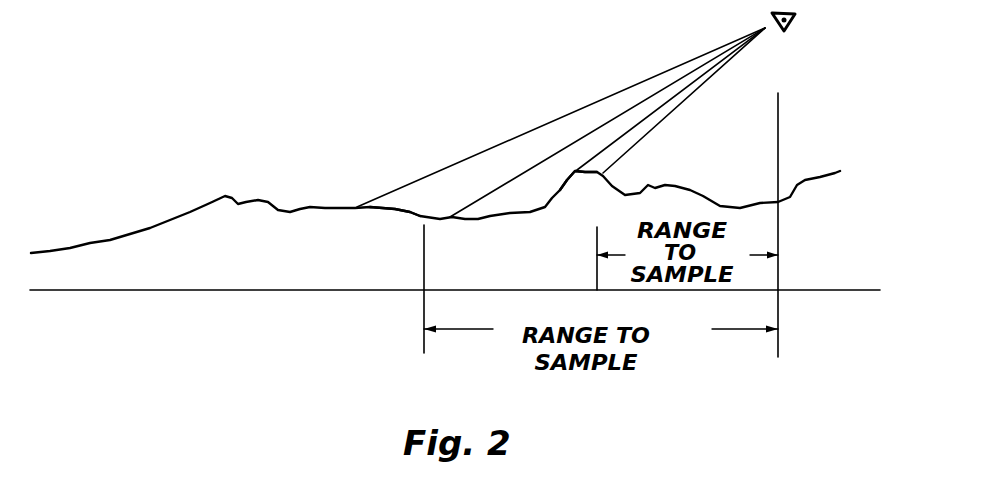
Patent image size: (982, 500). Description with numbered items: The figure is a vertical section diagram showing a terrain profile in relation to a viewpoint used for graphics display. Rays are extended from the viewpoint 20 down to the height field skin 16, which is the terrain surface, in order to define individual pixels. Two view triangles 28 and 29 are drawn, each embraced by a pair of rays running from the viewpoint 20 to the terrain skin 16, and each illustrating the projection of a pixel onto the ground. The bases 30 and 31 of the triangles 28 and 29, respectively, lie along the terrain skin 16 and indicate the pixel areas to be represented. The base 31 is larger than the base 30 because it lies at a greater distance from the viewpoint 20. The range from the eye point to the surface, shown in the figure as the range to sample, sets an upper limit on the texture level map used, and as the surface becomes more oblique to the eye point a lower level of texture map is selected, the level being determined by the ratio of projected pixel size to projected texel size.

The height field skin 16 is at (263, 202).
The viewpoint 20 is at (790, 22).
The view triangle 28 is at (657, 125).
The view triangle 29 is at (547, 123).
The base 30 is at (577, 174).
The base 31 is at (395, 212).